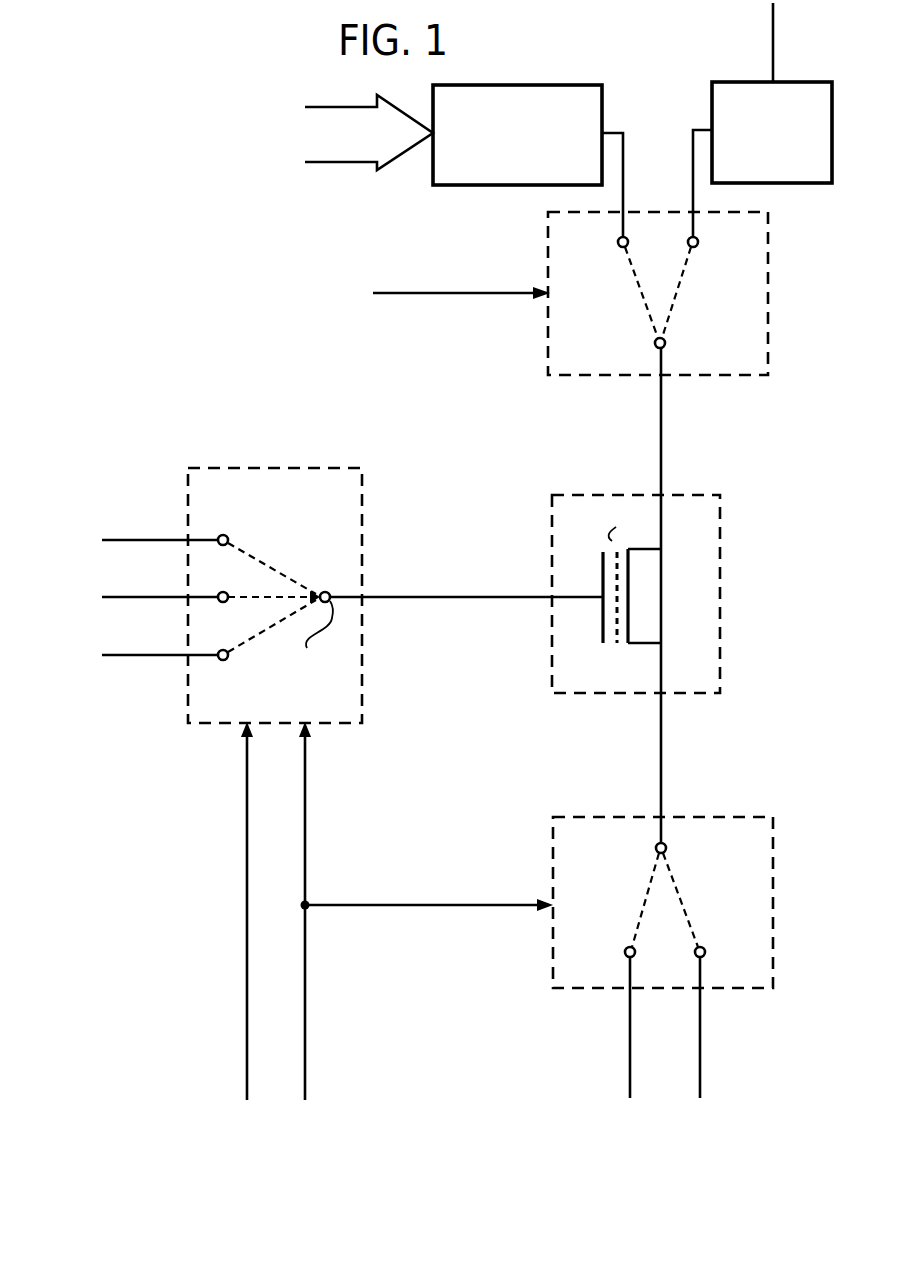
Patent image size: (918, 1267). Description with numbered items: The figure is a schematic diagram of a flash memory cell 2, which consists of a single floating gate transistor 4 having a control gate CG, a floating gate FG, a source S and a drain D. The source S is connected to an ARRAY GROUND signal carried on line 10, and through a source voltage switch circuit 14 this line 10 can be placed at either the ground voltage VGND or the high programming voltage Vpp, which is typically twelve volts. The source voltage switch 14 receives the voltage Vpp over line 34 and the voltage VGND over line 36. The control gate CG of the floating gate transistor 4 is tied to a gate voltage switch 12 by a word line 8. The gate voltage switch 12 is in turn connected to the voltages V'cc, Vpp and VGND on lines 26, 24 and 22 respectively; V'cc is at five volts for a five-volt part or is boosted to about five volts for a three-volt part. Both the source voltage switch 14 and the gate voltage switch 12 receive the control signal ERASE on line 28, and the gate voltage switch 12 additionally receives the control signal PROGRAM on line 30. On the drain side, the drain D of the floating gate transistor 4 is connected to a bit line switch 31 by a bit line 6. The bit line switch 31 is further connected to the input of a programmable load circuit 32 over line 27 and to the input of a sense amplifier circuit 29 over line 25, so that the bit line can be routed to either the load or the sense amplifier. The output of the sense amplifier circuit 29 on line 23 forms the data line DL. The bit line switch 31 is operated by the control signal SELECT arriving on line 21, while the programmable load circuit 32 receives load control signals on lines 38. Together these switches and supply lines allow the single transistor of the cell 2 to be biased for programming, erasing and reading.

The flash memory cell 2 is at (721, 559).
The floating gate transistor 4 is at (638, 603).
The bit line 6 is at (661, 448).
The word line 8 is at (409, 598).
The line 10 is at (661, 775).
The gate voltage switch 12 is at (362, 470).
The source voltage switch circuit 14 is at (553, 838).
The line 21 is at (460, 294).
The line 22 is at (117, 655).
The line 23 is at (773, 50).
The line 24 is at (117, 597).
The line 25 is at (693, 128).
The line 26 is at (143, 540).
The line 27 is at (613, 130).
The line 28 is at (305, 955).
The sense amplifier circuit 29 is at (743, 82).
The line 30 is at (247, 942).
The bit line switch 31 is at (548, 312).
The programmable load circuit 32 is at (495, 186).
The line 34 is at (632, 1045).
The line 36 is at (702, 1045).
The lines 38 is at (347, 163).